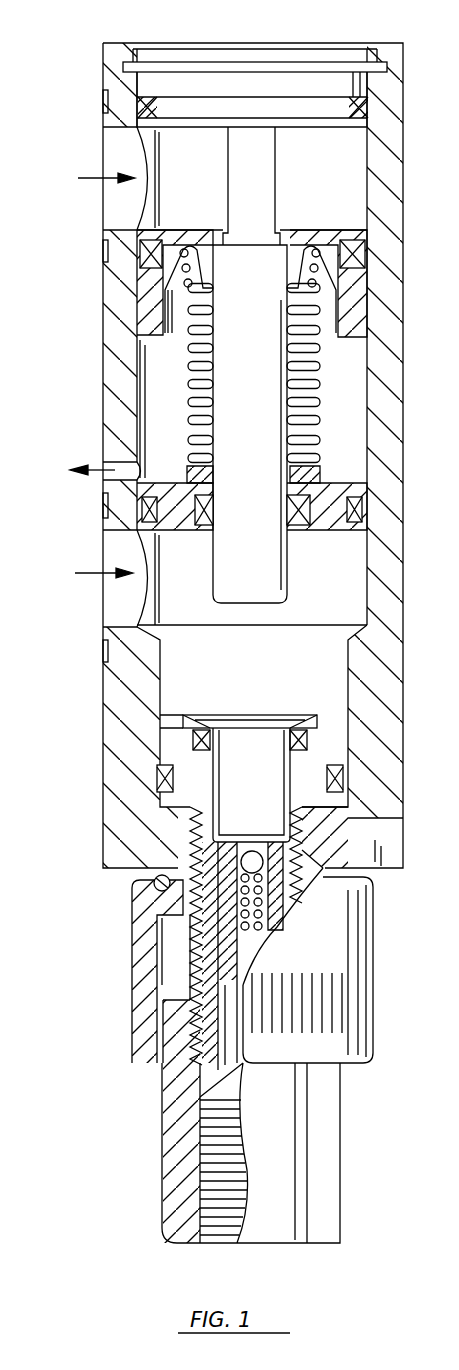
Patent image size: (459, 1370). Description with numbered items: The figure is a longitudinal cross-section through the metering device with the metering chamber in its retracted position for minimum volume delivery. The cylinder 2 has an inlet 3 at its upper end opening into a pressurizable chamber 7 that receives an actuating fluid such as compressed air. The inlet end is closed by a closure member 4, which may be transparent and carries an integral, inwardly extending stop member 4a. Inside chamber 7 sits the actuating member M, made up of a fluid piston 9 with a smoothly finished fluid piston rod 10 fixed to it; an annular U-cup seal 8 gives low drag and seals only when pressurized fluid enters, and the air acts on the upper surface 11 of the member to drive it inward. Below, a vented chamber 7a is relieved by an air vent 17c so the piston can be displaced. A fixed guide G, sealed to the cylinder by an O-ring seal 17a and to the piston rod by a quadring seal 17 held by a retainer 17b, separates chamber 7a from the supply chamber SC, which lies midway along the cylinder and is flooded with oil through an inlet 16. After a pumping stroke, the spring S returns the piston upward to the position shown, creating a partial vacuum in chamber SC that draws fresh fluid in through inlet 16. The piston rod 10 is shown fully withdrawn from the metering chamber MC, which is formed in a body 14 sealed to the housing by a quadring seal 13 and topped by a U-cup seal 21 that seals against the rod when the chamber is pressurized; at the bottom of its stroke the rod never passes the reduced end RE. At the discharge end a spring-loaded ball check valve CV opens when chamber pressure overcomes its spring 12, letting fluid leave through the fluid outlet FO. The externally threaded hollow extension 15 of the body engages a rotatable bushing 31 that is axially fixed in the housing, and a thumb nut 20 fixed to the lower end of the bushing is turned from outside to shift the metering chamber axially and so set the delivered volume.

The cylinder 2 is at (103, 370).
The inlet 3 is at (115, 140).
The closure member 4 is at (313, 82).
The stop member 4a is at (258, 230).
The chamber 7 is at (206, 167).
The vented chamber 7a is at (160, 352).
The annular seal 8 is at (140, 262).
The fluid piston 9 is at (145, 292).
The fluid piston rod 10 is at (260, 370).
The upper surface 11 is at (173, 230).
The spring 12 is at (232, 898).
The resilient annular seal 13 is at (158, 779).
The body 14 is at (158, 758).
The externally threaded hollow extension 15 is at (195, 942).
The inlet 16 is at (118, 603).
The quadring flexible seal 17 is at (202, 525).
The O-ring seal 17a is at (362, 510).
The retainer 17b is at (318, 467).
The air vent 17c is at (100, 478).
The thumb nut 20 is at (357, 948).
The annular resilient seal 21 is at (308, 742).
The rotatable bushing 31 is at (183, 866).
The actuating member M is at (325, 248).
The spring S is at (190, 403).
The fixed guide G is at (363, 490).
The fluid medium supply chamber SC is at (348, 585).
The metering chamber MC is at (272, 792).
The reduced end RE is at (292, 815).
The ball check valve CV is at (213, 857).
The fluid outlet FO is at (223, 1228).